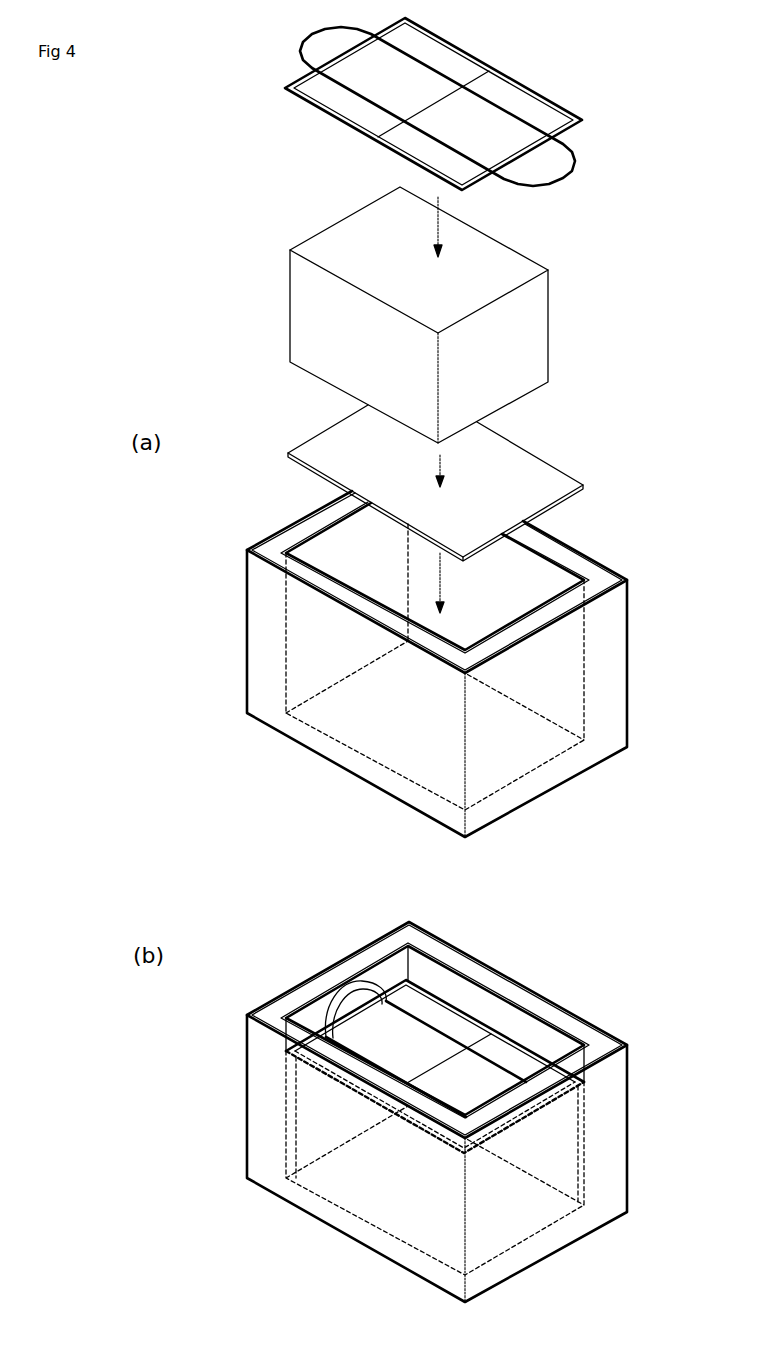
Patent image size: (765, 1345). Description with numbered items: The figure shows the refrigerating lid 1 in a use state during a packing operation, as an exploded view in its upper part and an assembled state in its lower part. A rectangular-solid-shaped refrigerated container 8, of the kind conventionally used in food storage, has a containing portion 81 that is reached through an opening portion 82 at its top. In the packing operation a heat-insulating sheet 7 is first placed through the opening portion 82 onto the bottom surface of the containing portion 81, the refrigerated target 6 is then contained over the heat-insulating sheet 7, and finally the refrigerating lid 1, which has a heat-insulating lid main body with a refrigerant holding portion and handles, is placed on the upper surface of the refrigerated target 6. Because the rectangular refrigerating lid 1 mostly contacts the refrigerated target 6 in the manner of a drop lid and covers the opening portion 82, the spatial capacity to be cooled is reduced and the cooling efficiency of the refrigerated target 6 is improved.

The refrigerating lid 1 is at (568, 82).
The refrigerated target 6 is at (312, 300).
The heat-insulating sheet 7 is at (288, 453).
The refrigerated container 8 is at (247, 620).
The containing portion 81 is at (330, 542).
The opening portion 82 is at (545, 578).